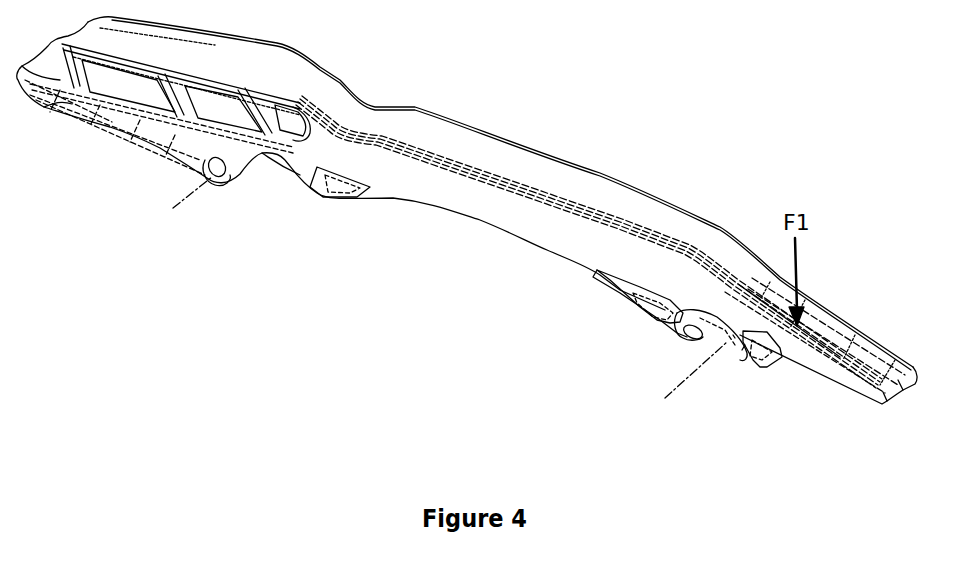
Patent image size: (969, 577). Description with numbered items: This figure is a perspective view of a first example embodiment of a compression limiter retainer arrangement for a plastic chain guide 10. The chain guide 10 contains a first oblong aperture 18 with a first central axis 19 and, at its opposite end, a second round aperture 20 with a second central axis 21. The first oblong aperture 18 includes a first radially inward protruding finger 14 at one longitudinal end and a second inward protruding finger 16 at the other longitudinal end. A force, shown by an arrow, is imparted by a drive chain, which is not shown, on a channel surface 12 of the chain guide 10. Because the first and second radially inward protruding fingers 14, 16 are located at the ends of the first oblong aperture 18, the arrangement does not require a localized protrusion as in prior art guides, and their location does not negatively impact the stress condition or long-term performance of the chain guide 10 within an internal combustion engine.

The chain guide 10 is at (467, 242).
The channel surface 12 is at (842, 352).
The first radially inward protruding finger 14 is at (700, 340).
The second inward protruding finger 16 is at (745, 348).
The first oblong aperture 18 is at (733, 337).
The first central axis 19 is at (680, 388).
The second round aperture 20 is at (230, 180).
The second central axis 21 is at (167, 212).